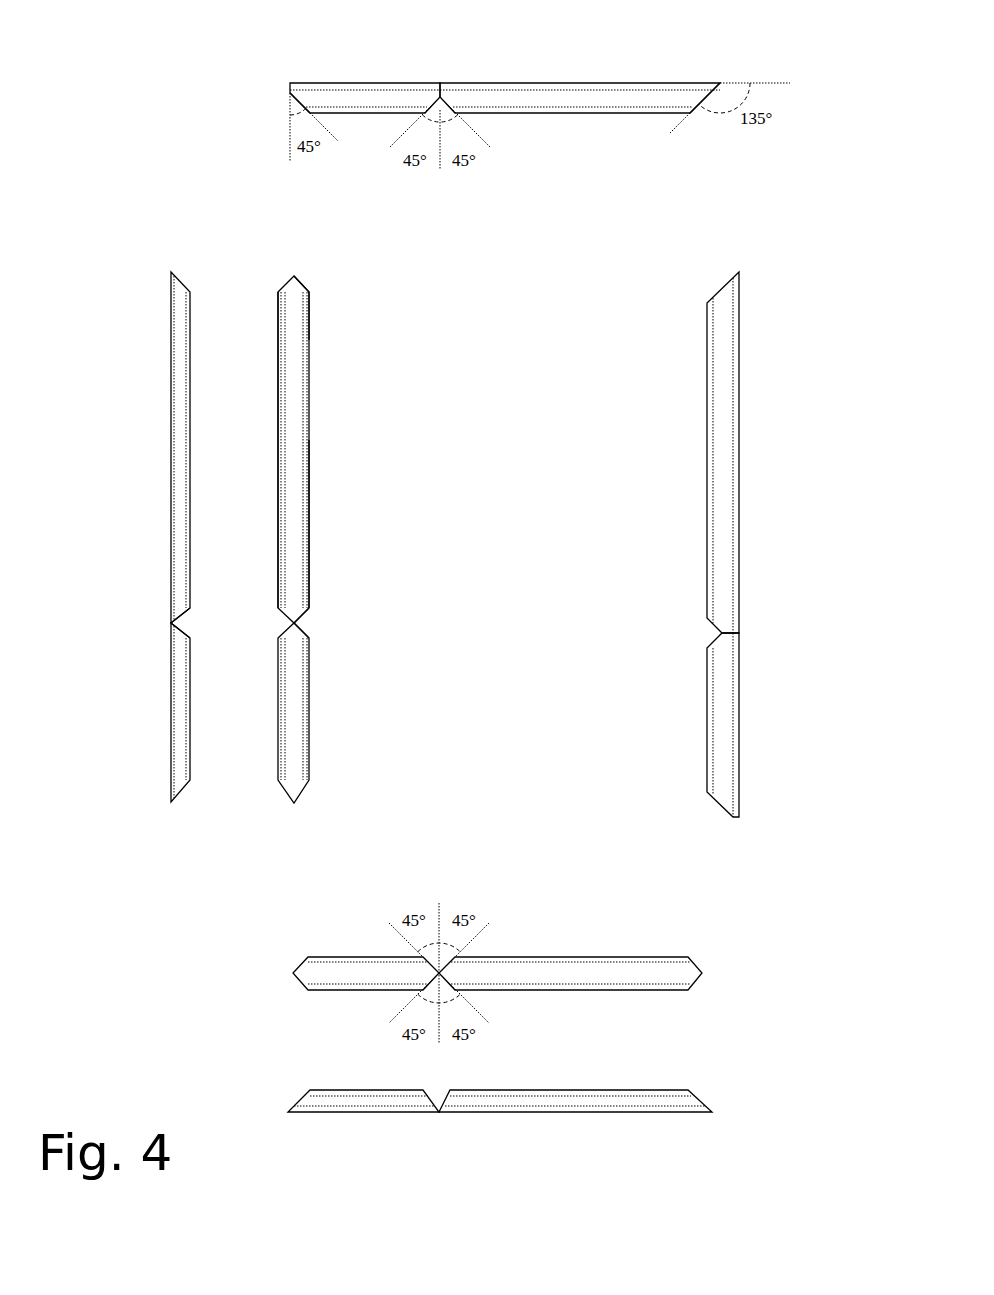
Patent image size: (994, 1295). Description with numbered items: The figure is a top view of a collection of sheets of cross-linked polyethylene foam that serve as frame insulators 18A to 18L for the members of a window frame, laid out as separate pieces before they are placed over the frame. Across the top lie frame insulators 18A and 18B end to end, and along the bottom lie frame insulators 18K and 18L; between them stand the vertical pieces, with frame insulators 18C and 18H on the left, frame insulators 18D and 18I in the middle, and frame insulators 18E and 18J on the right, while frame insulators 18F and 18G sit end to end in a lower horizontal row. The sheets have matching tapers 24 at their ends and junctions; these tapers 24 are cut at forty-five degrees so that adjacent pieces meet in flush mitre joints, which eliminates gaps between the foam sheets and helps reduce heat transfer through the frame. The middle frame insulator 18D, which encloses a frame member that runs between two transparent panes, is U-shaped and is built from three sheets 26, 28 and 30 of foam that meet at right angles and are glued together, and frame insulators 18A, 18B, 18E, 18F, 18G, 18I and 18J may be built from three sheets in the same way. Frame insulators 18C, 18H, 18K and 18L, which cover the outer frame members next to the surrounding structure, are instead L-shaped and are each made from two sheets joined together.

The frame insulator 18A is at (388, 83).
The frame insulator 18B is at (640, 83).
The frame insulator 18C is at (170, 425).
The frame insulator 18D is at (310, 438).
The frame insulator 18E is at (739, 478).
The frame insulator 18F is at (362, 957).
The frame insulator 18G is at (562, 957).
The frame insulator 18H is at (170, 653).
The frame insulator 18I is at (311, 770).
The frame insulator 18J is at (740, 708).
The frame insulator 18K is at (375, 1112).
The frame insulator 18L is at (570, 1112).
The taper 24 is at (300, 106).
The sheet 26 is at (277, 332).
The sheet 28 is at (309, 337).
The sheet 30 is at (310, 518).